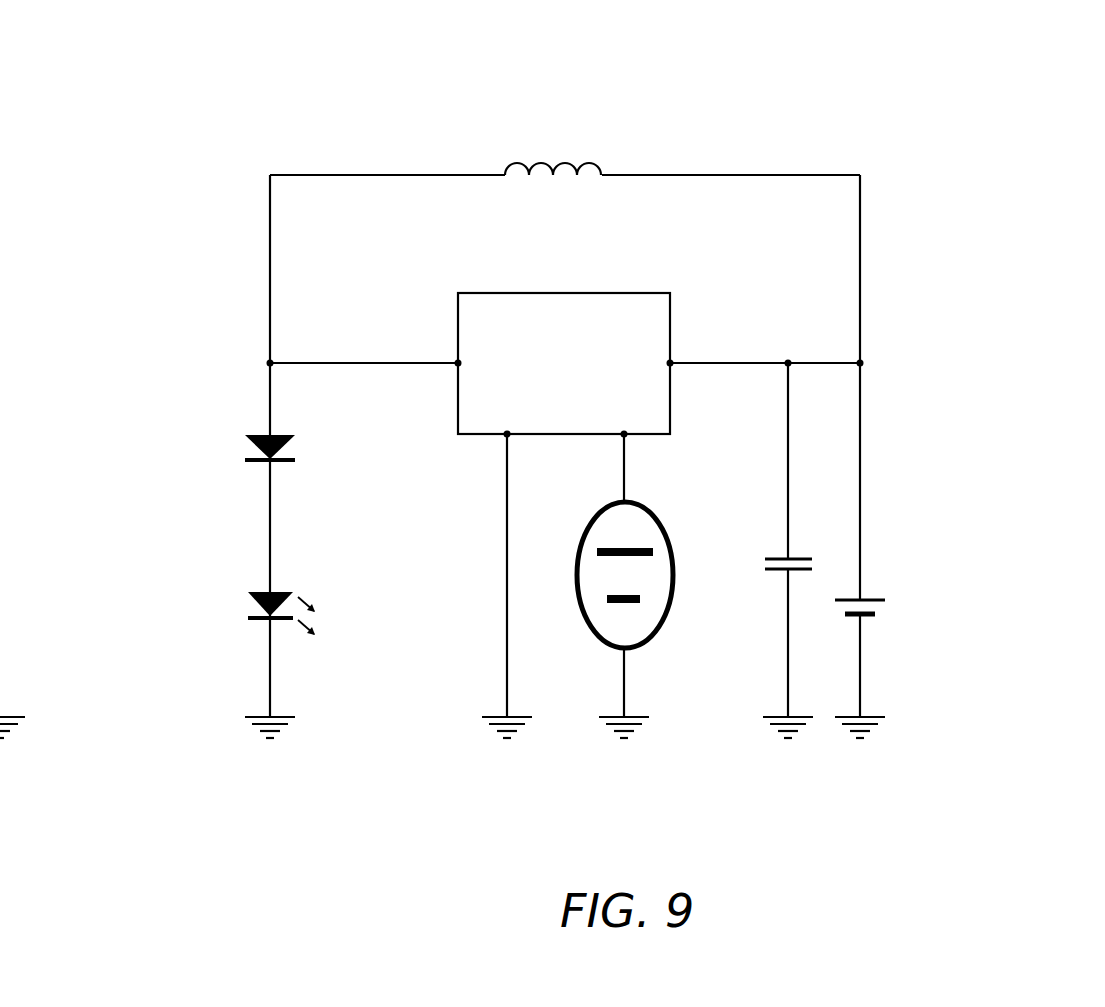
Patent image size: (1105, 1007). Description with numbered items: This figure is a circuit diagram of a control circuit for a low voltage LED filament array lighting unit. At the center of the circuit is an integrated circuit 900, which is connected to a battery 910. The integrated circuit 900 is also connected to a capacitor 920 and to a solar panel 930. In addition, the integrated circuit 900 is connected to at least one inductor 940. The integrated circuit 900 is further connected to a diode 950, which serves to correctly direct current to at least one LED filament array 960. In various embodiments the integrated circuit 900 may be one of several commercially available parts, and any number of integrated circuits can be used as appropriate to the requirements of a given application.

The integrated circuit 900 is at (587, 330).
The battery 910 is at (875, 614).
The capacitor 920 is at (807, 559).
The solar panel 930 is at (660, 580).
The inductor 940 is at (571, 163).
The diode 950 is at (243, 437).
The LED filament array 960 is at (243, 600).